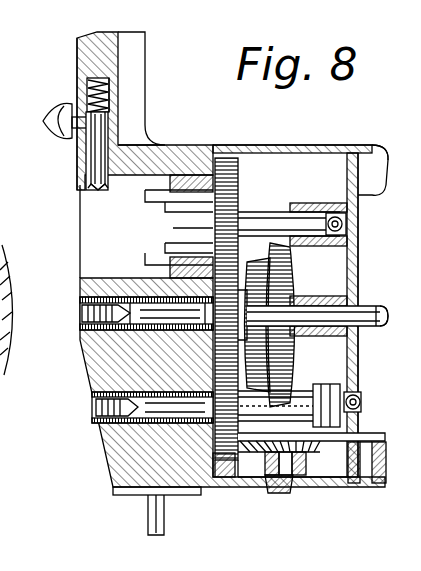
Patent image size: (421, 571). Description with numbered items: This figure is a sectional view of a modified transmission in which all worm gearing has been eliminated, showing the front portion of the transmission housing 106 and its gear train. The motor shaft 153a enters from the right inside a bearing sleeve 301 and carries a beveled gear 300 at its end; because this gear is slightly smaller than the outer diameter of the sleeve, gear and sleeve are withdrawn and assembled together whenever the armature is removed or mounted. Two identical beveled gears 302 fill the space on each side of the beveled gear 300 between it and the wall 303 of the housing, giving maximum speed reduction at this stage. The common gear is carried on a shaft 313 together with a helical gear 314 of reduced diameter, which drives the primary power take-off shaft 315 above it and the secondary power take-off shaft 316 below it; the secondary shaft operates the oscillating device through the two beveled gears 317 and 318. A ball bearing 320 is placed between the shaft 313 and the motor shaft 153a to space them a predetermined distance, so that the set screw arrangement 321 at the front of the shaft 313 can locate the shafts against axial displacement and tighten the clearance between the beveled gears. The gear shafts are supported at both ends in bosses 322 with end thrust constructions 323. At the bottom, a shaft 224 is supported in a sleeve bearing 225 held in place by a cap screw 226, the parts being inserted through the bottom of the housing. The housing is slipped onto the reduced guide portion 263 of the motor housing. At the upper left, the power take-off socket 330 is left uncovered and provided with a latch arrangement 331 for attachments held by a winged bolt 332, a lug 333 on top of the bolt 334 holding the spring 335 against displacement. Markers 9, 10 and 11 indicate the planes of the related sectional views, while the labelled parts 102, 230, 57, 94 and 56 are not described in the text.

The column housing 102 is at (94, 40).
The spring 335 is at (108, 80).
The lug 333 is at (118, 97).
The winged bolt 332 is at (56, 114).
The latch arrangement 331 is at (91, 165).
The bolt 334 is at (92, 186).
The power take-off socket 330 is at (128, 246).
The shaft 313 is at (146, 313).
The helical gear 314 is at (172, 318).
The set screw arrangement 321 is at (83, 318).
The secondary power take-off shaft 316 is at (300, 379).
The primary power take-off shaft 315 is at (250, 192).
The transmission housing 106 is at (212, 145).
The bosses 322 is at (270, 203).
The end thrust constructions 323 is at (346, 224).
The beveled gears 302 is at (272, 272).
The beveled gear 300 is at (286, 306).
The ball bearing 320 is at (317, 315).
The motor shaft 153a is at (348, 312).
The beveled gear 318 is at (262, 480).
The beveled gear 317 is at (222, 480).
The shaft 224 is at (300, 462).
The cap screw 226 is at (272, 494).
The sleeve bearing 225 is at (305, 487).
The bearing block 230 is at (367, 474).
The reduced guide portion 263 is at (368, 145).
The bearing sleeve 301 is at (320, 300).
The section line 9 is at (152, 93).
The section line 11 is at (258, 105).
The section line 10 is at (30, 326).
The wall 303 is at (16, 325).
The adjacent part 57 is at (10, 437).
The adjacent part 94 is at (9, 455).
The adjacent part 56 is at (7, 485).